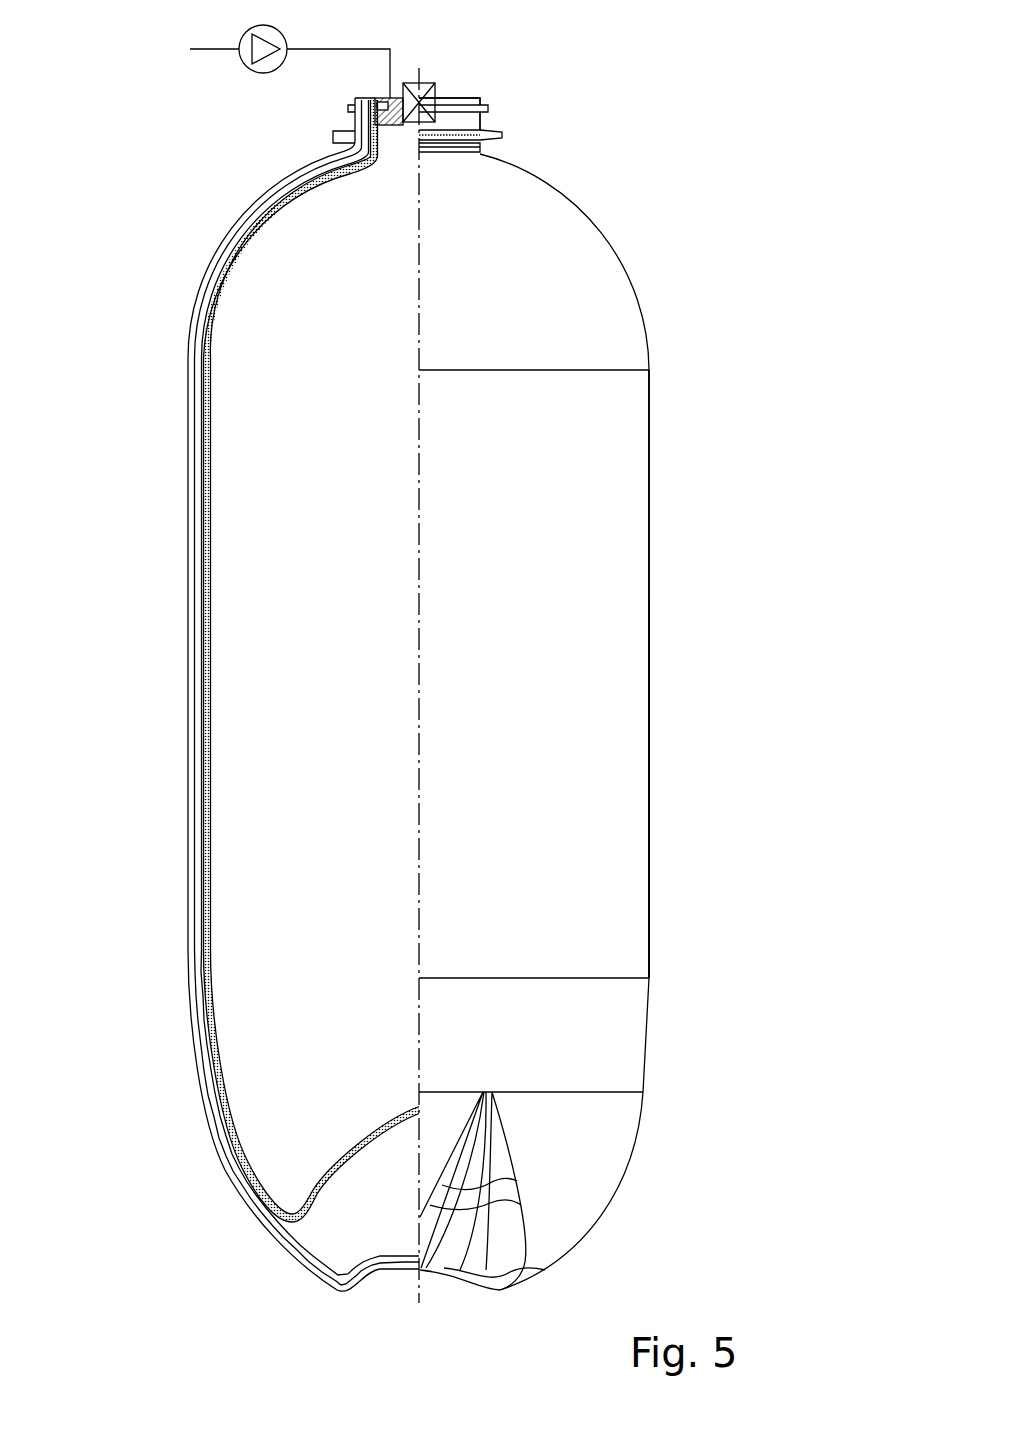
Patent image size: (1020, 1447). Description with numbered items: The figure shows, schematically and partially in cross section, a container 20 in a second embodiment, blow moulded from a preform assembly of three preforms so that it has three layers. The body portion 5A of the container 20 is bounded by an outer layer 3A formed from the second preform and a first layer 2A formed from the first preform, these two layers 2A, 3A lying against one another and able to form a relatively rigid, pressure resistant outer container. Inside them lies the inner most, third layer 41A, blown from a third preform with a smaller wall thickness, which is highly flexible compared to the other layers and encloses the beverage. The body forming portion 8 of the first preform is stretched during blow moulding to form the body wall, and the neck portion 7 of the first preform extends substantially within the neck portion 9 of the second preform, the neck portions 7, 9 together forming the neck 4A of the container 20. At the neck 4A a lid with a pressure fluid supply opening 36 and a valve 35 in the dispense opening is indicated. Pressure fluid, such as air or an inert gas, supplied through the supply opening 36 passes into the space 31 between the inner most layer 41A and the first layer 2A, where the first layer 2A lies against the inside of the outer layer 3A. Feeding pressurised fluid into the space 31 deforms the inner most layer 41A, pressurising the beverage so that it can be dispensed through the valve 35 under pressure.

The container 20 is at (633, 240).
The body forming portion 8 is at (667, 607).
The body portion 5A is at (667, 670).
The neck portion 7 is at (500, 102).
The neck portion 9 is at (449, 114).
The neck 4A is at (510, 121).
The valve 35 is at (437, 86).
The pressure fluid supply opening 36 is at (394, 96).
The outer layer 3A is at (190, 652).
The inner layer 2A is at (196, 692).
The space 31 is at (203, 740).
The inner most layer 41A is at (210, 795).